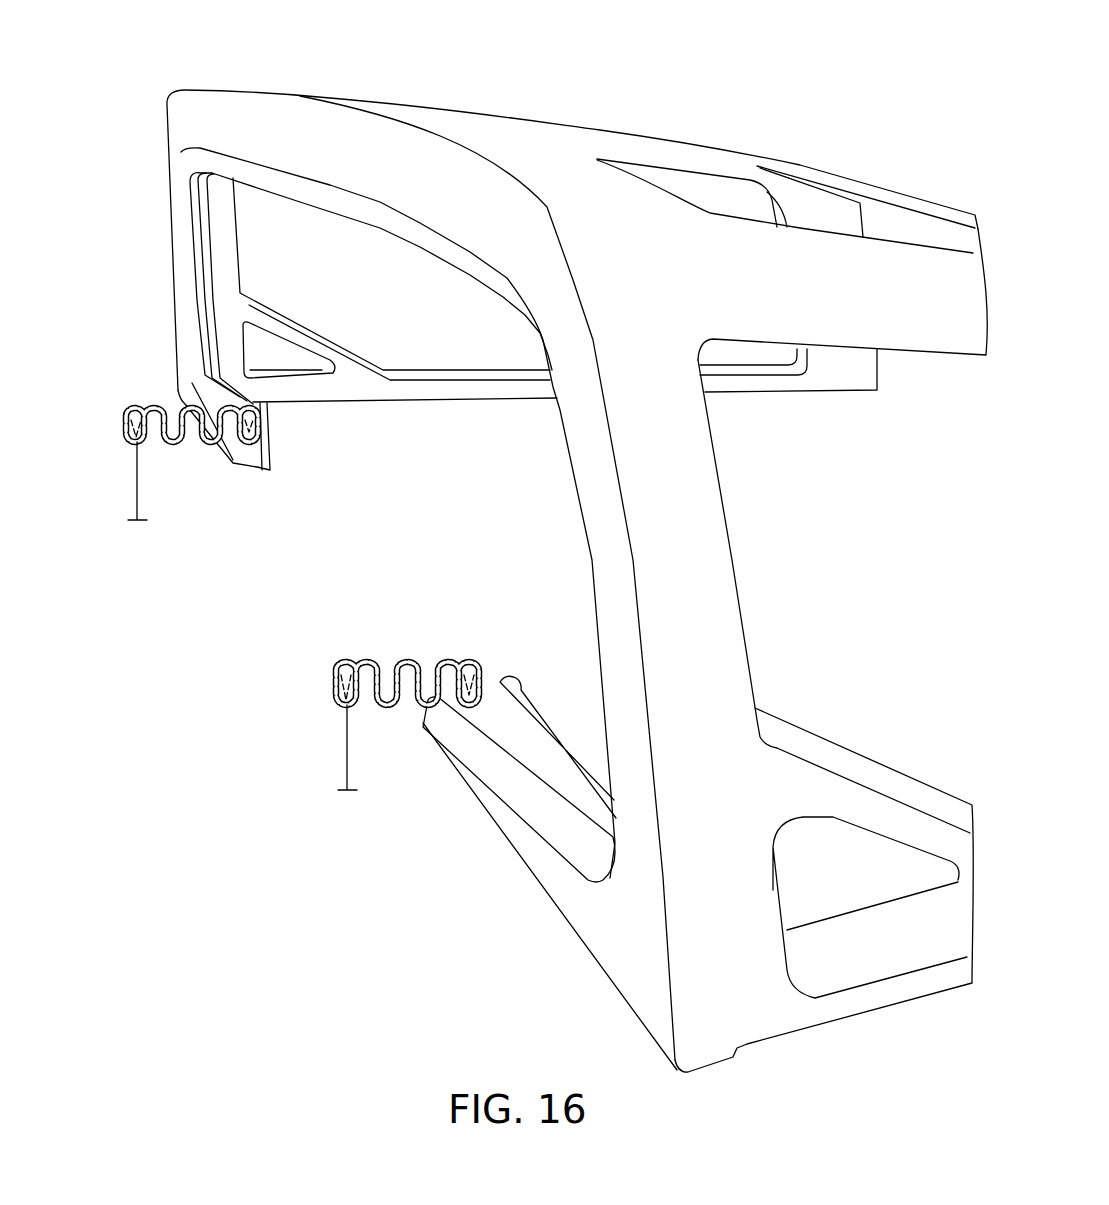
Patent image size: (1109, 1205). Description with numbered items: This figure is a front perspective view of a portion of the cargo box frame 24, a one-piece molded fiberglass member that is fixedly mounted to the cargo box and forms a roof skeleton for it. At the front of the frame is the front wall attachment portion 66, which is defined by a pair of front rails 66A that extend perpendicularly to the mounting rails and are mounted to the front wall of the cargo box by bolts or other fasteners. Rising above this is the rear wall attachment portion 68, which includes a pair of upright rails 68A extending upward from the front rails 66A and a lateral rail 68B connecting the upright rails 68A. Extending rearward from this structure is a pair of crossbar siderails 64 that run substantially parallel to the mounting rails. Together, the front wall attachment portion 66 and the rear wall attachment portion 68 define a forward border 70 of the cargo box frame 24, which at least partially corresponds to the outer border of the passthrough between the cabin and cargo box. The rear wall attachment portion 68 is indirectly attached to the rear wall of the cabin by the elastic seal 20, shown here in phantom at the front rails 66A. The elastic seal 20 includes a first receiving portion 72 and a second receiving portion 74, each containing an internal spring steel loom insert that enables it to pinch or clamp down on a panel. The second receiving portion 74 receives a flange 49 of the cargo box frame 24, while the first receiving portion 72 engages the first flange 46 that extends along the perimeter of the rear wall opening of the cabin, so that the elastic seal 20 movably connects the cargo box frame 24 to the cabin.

The cargo box frame 24 is at (585, 78).
The rear wall attachment portion 68 is at (138, 181).
The upright rails 68A is at (180, 260).
The lateral rail 68B is at (367, 148).
The crossbar siderails 64 is at (707, 162).
The front wall attachment portion 66 is at (196, 478).
The front rails 66A is at (515, 830).
The flange 49 is at (262, 449).
The forward border 70 is at (118, 381).
The elastic seal 20 is at (149, 388).
The first receiving portion 72 is at (126, 410).
The second receiving portion 74 is at (263, 404).
The first flange 46 is at (137, 493).